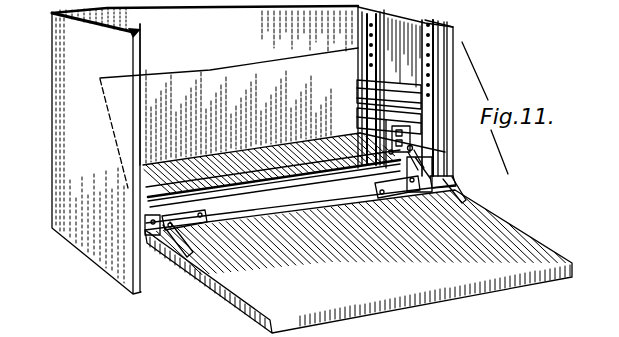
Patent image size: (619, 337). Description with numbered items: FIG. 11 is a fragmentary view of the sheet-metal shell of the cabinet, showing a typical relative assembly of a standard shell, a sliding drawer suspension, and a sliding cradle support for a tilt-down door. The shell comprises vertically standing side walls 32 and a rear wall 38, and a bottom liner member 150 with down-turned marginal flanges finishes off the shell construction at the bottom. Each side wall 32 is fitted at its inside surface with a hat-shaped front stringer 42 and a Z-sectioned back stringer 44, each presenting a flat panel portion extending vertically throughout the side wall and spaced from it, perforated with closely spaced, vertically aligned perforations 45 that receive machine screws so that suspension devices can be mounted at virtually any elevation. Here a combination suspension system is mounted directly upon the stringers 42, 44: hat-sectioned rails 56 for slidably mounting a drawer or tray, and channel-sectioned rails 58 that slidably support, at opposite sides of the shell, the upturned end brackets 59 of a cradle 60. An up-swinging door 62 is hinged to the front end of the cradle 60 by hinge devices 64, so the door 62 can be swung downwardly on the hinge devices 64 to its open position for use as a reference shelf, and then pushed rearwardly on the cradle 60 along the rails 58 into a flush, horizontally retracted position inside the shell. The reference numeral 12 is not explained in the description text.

The cabinet housing 12 is at (98, 78).
The side wall 32 is at (64, 64).
The rear wall 38 is at (252, 82).
The front stringer 42 is at (430, 63).
The back stringer 44 is at (368, 25).
The perforations 45 is at (368, 59).
The hat-sectioned rail 56 is at (356, 88).
The channel-sectioned rail 58 is at (432, 141).
The upturned end bracket 59 is at (425, 158).
The cradle 60 is at (317, 188).
The door 62 is at (378, 266).
The hinge device 64 is at (203, 214).
The bottom liner member 150 is at (268, 170).